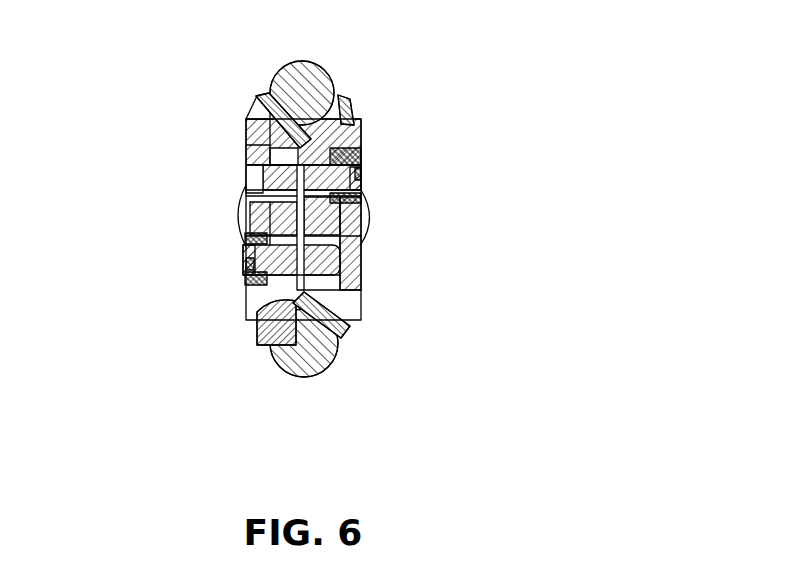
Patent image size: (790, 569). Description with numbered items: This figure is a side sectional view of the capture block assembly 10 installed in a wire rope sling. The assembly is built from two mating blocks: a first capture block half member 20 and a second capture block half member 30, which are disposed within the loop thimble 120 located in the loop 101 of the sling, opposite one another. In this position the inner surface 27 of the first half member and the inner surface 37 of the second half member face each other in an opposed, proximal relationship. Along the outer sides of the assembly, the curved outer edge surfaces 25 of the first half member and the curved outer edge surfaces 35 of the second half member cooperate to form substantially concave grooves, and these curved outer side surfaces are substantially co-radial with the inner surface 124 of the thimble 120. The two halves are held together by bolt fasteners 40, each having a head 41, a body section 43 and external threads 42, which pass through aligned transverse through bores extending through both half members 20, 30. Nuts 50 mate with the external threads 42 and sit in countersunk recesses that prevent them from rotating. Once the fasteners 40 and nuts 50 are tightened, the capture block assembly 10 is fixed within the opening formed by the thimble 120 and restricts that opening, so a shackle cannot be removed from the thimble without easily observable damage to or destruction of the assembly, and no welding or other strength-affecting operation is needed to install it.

The capture block assembly 10 is at (376, 326).
The first capture block half member 20 is at (243, 243).
The curved outer edge surfaces 25 is at (257, 97).
The inner surface 27 is at (362, 292).
The second capture block half member 30 is at (360, 223).
The curved outer edge surfaces 35 is at (362, 120).
The inner surface 37 is at (247, 145).
The bolt fasteners 40 is at (370, 173).
The head 41 is at (248, 193).
The external threads 42 is at (370, 195).
The body section 43 is at (370, 160).
The nuts 50 is at (370, 200).
The loop 101 is at (330, 70).
The loop thimble 120 is at (343, 95).
The inner surface 124 is at (262, 298).